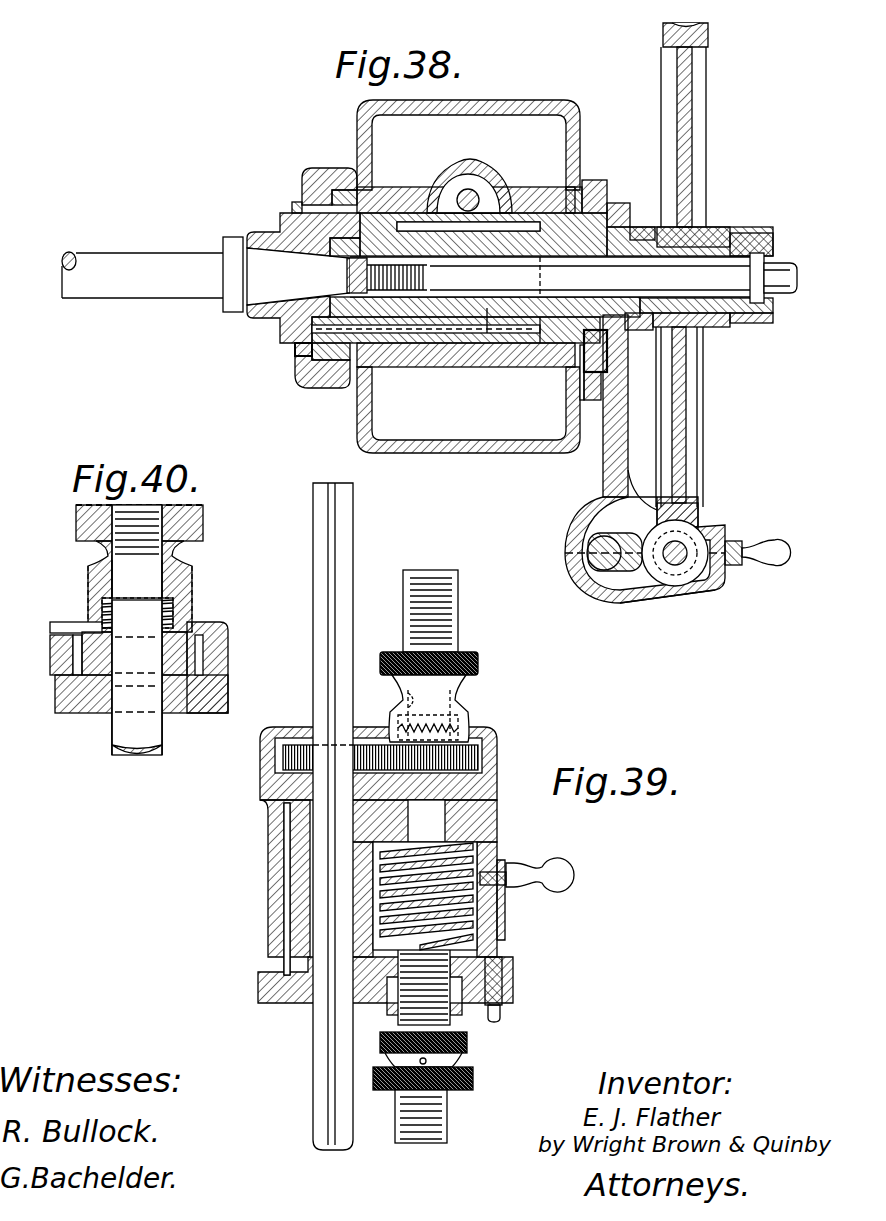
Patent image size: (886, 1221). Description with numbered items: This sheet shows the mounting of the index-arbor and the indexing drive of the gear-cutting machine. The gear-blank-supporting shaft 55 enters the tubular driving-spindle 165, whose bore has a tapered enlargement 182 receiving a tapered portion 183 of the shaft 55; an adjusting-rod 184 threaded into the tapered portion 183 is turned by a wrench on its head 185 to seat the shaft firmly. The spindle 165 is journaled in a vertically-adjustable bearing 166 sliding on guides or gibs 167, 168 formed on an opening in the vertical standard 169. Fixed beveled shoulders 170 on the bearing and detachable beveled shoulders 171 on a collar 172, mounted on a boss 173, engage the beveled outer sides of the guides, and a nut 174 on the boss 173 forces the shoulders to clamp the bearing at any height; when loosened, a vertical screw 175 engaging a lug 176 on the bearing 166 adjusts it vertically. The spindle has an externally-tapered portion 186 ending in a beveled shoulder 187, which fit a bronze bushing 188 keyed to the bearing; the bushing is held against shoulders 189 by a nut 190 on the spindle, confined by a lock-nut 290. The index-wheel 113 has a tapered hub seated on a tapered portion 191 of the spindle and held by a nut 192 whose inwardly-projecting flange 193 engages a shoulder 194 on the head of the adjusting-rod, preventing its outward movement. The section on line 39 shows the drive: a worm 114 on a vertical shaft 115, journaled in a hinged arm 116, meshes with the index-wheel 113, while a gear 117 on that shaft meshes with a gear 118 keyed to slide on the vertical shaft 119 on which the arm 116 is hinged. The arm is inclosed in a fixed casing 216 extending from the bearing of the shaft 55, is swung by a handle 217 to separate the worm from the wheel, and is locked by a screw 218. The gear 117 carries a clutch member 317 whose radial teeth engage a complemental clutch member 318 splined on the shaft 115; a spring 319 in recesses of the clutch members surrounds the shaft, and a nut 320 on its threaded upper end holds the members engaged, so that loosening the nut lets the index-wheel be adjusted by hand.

In FIG. 38, the gear-blank-supporting shaft 55 is at (211, 289).
In FIG. 38, the tapered portion of the shaft 183 is at (267, 306).
In FIG. 38, the tapered enlargement of the spindle bore 182 is at (282, 322).
In FIG. 38, the shoulders in the bearing 189 is at (308, 169).
In FIG. 38, the fixed beveled shoulders 170 is at (346, 168).
In FIG. 38, the externally-tapered portion of the spindle 186 is at (305, 390).
In FIG. 38, the beveled shoulder 187 is at (296, 356).
In FIG. 38, the vertical standard 169 is at (576, 105).
In FIG. 38, the guides or gibs 167 is at (376, 192).
In FIG. 38, the lug 176 is at (486, 176).
In FIG. 38, the vertical screw 175 is at (467, 189).
In FIG. 38, the adjusting-rod 184 is at (714, 326).
In FIG. 38, the bushing 188 is at (398, 322).
In FIG. 38, the tubular driving-spindle 165 is at (487, 333).
In FIG. 38, the vertically-adjustable bearing 166 is at (554, 342).
In FIG. 38, the guides or gibs 168 is at (585, 203).
In FIG. 38, the detachable beveled shoulders 171 is at (593, 180).
In FIG. 38, the collar 172 is at (610, 197).
In FIG. 38, the clamping-nut 174 is at (628, 224).
In FIG. 38, the worm-geared index-wheel 113 is at (700, 80).
In FIG. 39, the worm-geared index-wheel 113 is at (452, 620).
In FIG. 38, the tapered portion of the spindle periphery 191 is at (709, 231).
In FIG. 38, the nut 192 is at (755, 233).
In FIG. 38, the head of the adjusting-rod 185 is at (781, 253).
In FIG. 38, the inwardly-projecting flange 193 is at (769, 297).
In FIG. 38, the shoulder on the head of the adjusting-rod 194 is at (757, 324).
In FIG. 38, the nut 190 is at (629, 318).
In FIG. 38, the boss 173 is at (622, 345).
In FIG. 38, the lock-nut 290 is at (690, 350).
In FIG. 38, the vertical shaft 119 is at (582, 572).
In FIG. 39, the vertical shaft 119 is at (316, 672).
In FIG. 38, the section line 39 is at (565, 553).
In FIG. 38, the hinged arm 116 is at (632, 576).
In FIG. 39, the hinged arm 116 is at (498, 846).
In FIG. 38, the worm 114 is at (660, 580).
In FIG. 39, the worm 114 is at (480, 917).
In FIG. 38, the vertical shaft 115 is at (675, 566).
In FIG. 40, the vertical shaft 115 is at (160, 735).
In FIG. 39, the vertical shaft 115 is at (433, 811).
In FIG. 38, the fixed casing 216 is at (700, 594).
In FIG. 39, the fixed casing 216 is at (262, 789).
In FIG. 38, the handle 217 is at (762, 540).
In FIG. 39, the handle 217 is at (564, 859).
In FIG. 40, the nut 320 is at (204, 524).
In FIG. 39, the nut 320 is at (479, 663).
In FIG. 40, the complemental clutch member 318 is at (192, 590).
In FIG. 39, the complemental clutch member 318 is at (463, 705).
In FIG. 40, the spring 319 is at (100, 610).
In FIG. 40, the clutch member 317 is at (194, 630).
In FIG. 39, the clutch member 317 is at (465, 735).
In FIG. 40, the gear 118 is at (50, 654).
In FIG. 39, the gear 118 is at (262, 748).
In FIG. 40, the gear 117 is at (210, 655).
In FIG. 39, the gear 117 is at (481, 756).
In FIG. 39, the screw 218 is at (504, 996).